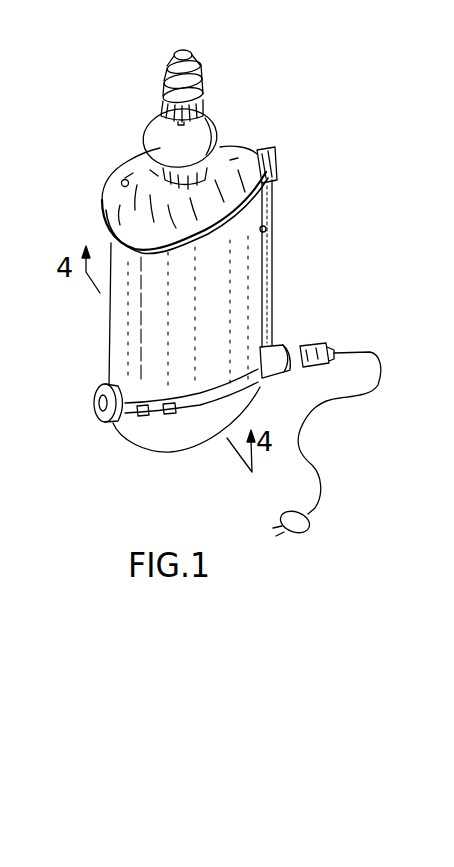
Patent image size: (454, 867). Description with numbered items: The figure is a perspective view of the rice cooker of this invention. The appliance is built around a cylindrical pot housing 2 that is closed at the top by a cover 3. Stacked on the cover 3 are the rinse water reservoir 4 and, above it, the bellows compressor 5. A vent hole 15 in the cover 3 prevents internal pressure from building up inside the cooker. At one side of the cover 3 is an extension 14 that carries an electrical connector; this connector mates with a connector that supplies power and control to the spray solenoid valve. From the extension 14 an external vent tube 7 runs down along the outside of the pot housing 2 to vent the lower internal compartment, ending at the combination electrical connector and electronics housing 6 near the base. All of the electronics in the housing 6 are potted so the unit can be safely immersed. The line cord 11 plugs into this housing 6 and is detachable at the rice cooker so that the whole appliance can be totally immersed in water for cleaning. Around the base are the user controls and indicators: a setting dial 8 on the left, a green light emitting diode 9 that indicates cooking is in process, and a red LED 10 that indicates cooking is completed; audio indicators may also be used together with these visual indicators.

The pot housing 2 is at (116, 338).
The cover 3 is at (104, 206).
The rinse water reservoir 4 is at (219, 133).
The bellows compressor 5 is at (162, 79).
The combination electrical connector and electronics housing 6 is at (280, 347).
The external vent tube 7 is at (253, 247).
The setting dial 8 is at (95, 412).
The green light emitting diode (LED) 9 is at (139, 416).
The red LED 10 is at (174, 415).
The line cord 11 is at (381, 357).
The cover extension 14 is at (274, 152).
The vent hole 15 is at (121, 177).